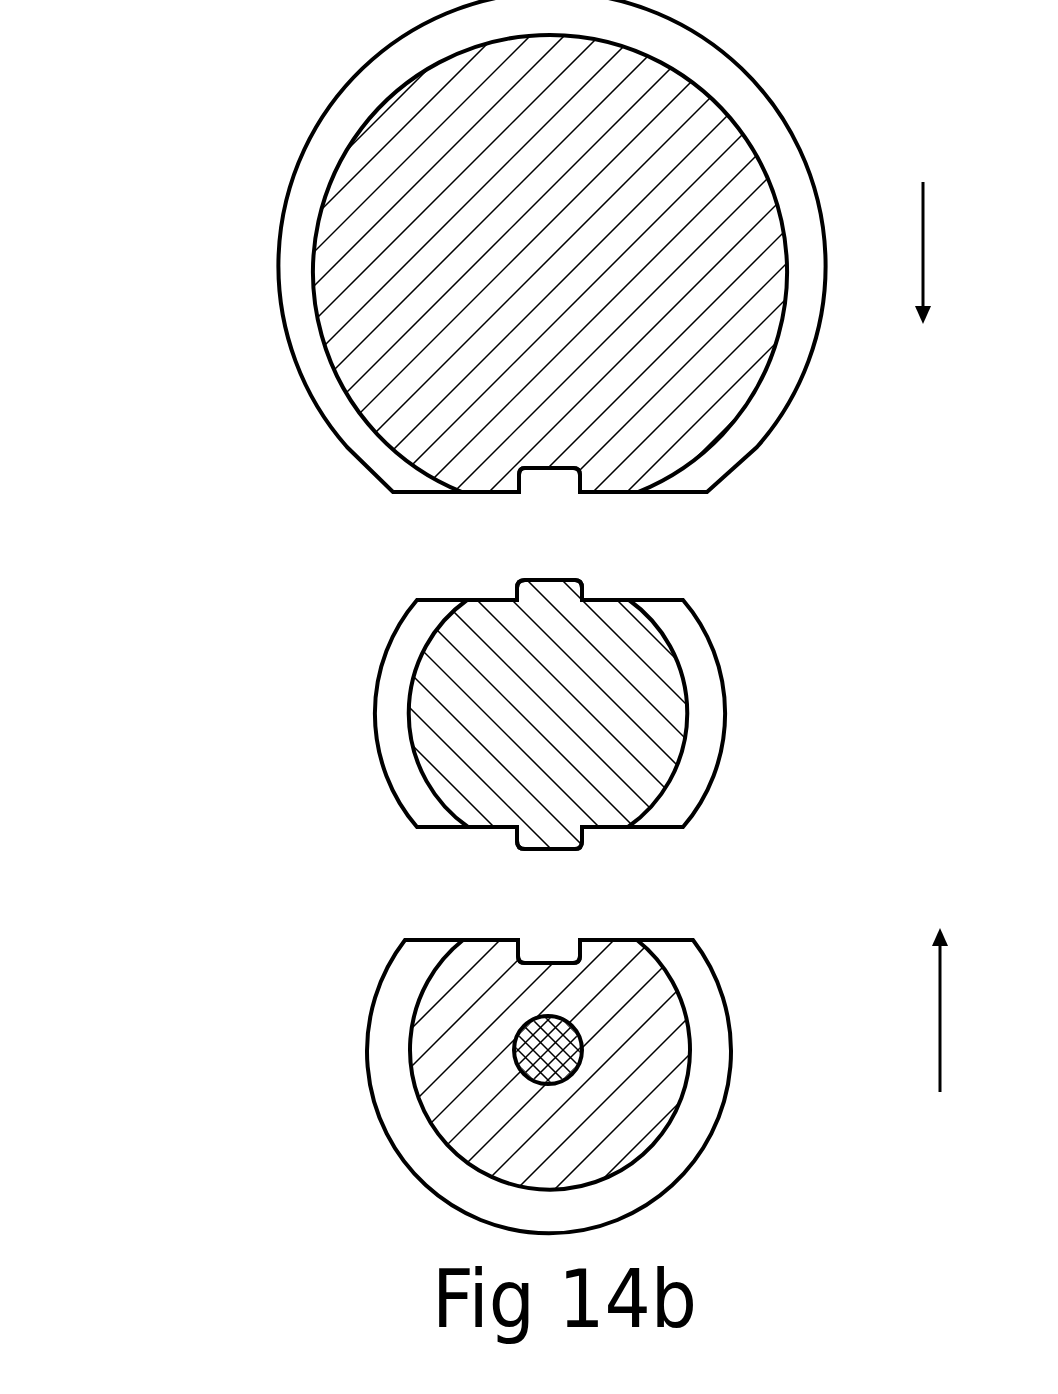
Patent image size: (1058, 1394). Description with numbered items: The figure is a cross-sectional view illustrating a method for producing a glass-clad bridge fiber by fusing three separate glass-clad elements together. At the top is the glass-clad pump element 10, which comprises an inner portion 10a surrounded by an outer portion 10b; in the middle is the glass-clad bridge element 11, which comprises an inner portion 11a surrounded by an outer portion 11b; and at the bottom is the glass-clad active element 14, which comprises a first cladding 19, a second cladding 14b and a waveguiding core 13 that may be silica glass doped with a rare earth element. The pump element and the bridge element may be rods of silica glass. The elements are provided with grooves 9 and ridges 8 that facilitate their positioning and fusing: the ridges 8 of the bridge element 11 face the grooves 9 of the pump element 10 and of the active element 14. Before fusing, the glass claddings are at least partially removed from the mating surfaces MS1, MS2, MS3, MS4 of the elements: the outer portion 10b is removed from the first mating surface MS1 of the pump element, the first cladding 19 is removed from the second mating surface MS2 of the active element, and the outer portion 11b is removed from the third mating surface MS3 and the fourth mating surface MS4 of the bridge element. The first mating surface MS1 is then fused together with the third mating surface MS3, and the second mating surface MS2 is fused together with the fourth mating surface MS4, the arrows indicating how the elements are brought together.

The ridge 8 is at (547, 592).
The groove 9 is at (553, 467).
The glass-clad pump element 10 is at (224, 271).
The inner portion 10a is at (318, 308).
The outer portion 10b is at (289, 192).
The glass-clad bridge element 11 is at (228, 667).
The inner portion 11a is at (410, 715).
The outer portion 11b is at (380, 670).
The waveguiding core 13 is at (582, 1053).
The glass-clad active element 14 is at (220, 1035).
The second cladding 14b is at (370, 1018).
The first cladding 19 is at (410, 1066).
The first mating surface MS1 is at (485, 938).
The second mating surface MS2 is at (618, 496).
The third mating surface MS3 is at (620, 828).
The fourth mating surface MS4 is at (490, 597).